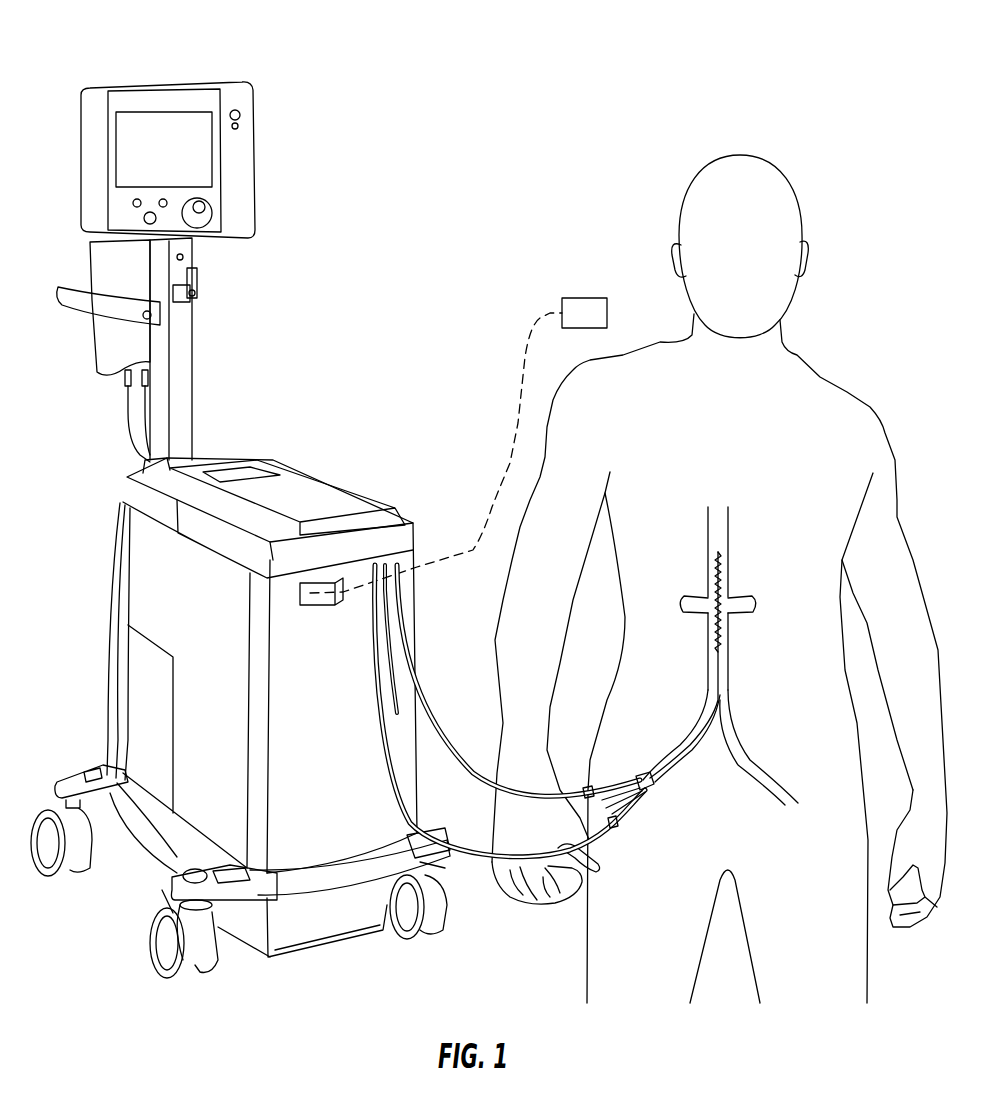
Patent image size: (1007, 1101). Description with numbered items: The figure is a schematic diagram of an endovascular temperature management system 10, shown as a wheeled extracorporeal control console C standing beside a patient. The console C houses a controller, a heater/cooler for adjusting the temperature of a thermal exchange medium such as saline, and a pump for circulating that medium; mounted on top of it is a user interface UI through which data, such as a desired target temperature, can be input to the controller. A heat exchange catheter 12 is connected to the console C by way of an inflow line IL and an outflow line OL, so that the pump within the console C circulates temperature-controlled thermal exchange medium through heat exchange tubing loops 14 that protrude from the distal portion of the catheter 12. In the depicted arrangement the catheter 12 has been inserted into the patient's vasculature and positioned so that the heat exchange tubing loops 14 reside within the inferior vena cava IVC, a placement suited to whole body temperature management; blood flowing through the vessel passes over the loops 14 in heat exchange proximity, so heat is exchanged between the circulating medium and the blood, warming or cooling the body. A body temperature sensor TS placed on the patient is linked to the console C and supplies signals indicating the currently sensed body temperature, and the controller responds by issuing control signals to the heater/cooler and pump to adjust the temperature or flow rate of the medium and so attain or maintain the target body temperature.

The endovascular temperature management system 10 is at (320, 322).
The extracorporeal control console C is at (92, 592).
The user interface UI is at (135, 90).
The body temperature sensor TS is at (583, 298).
The inferior vena cava IVC is at (727, 535).
The heat exchange tubing loops 14 is at (735, 584).
The heat exchange catheter 12 is at (666, 780).
The inflow line IL is at (442, 737).
The outflow line OL is at (478, 868).